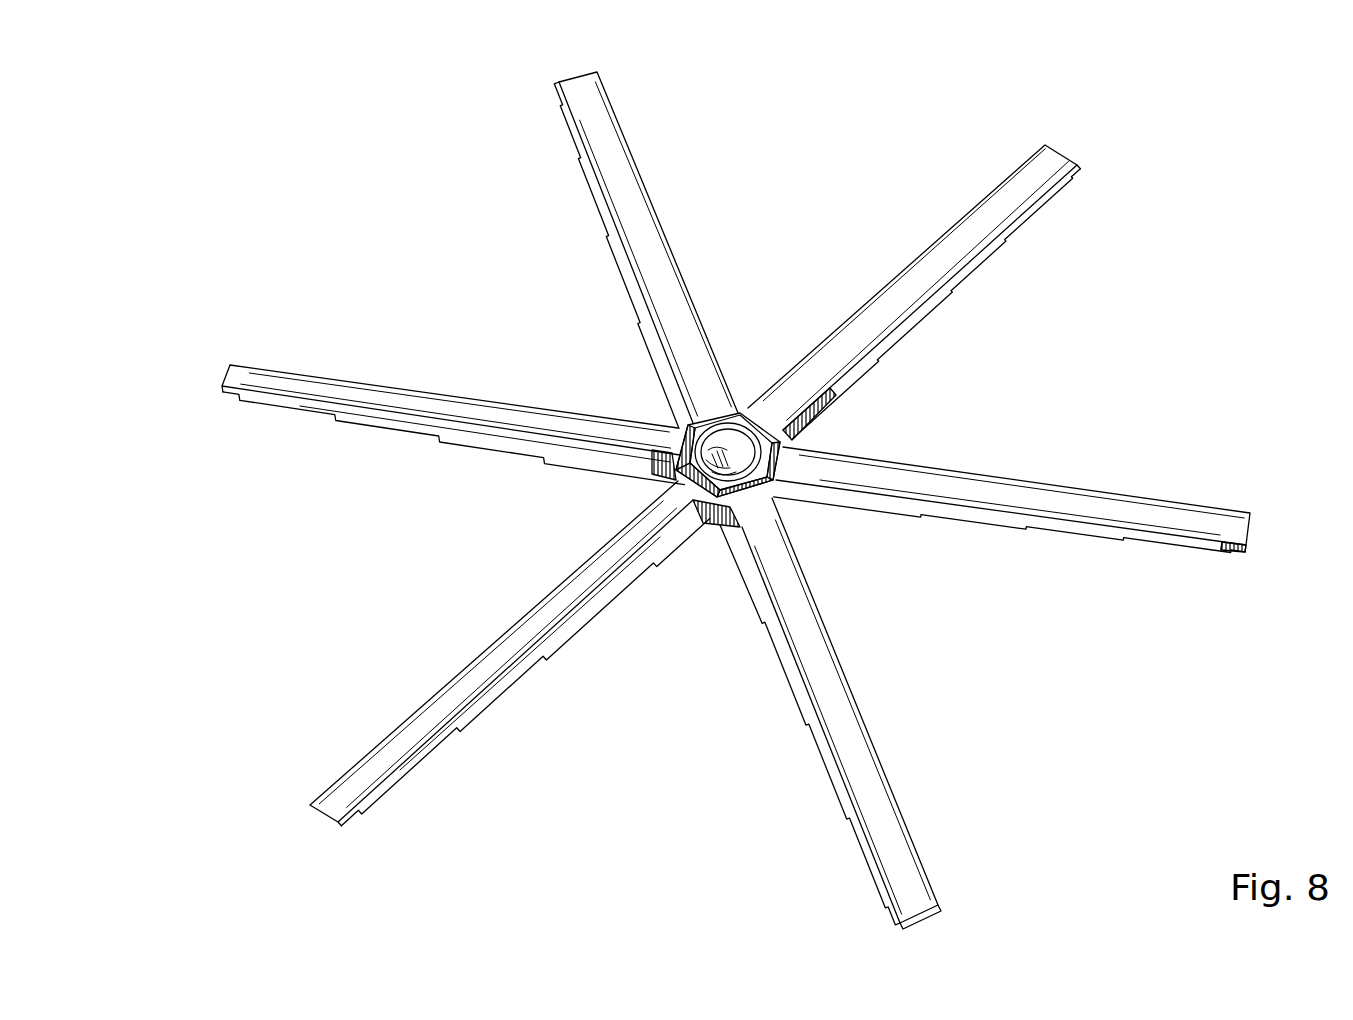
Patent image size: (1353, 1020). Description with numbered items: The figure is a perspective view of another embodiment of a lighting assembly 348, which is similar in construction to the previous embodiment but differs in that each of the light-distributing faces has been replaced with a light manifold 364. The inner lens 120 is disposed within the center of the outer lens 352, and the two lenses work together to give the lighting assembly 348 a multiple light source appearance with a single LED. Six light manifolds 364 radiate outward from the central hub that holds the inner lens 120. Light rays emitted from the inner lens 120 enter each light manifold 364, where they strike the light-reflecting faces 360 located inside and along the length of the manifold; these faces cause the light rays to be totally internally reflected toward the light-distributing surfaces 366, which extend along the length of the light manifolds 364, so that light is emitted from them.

The lighting assembly 348 is at (316, 116).
The light manifold 364 is at (669, 161).
The light-distributing surface 366 is at (619, 165).
The light-reflecting face 360 is at (563, 102).
The outer lens 352 is at (795, 452).
The inner lens 120 is at (725, 443).